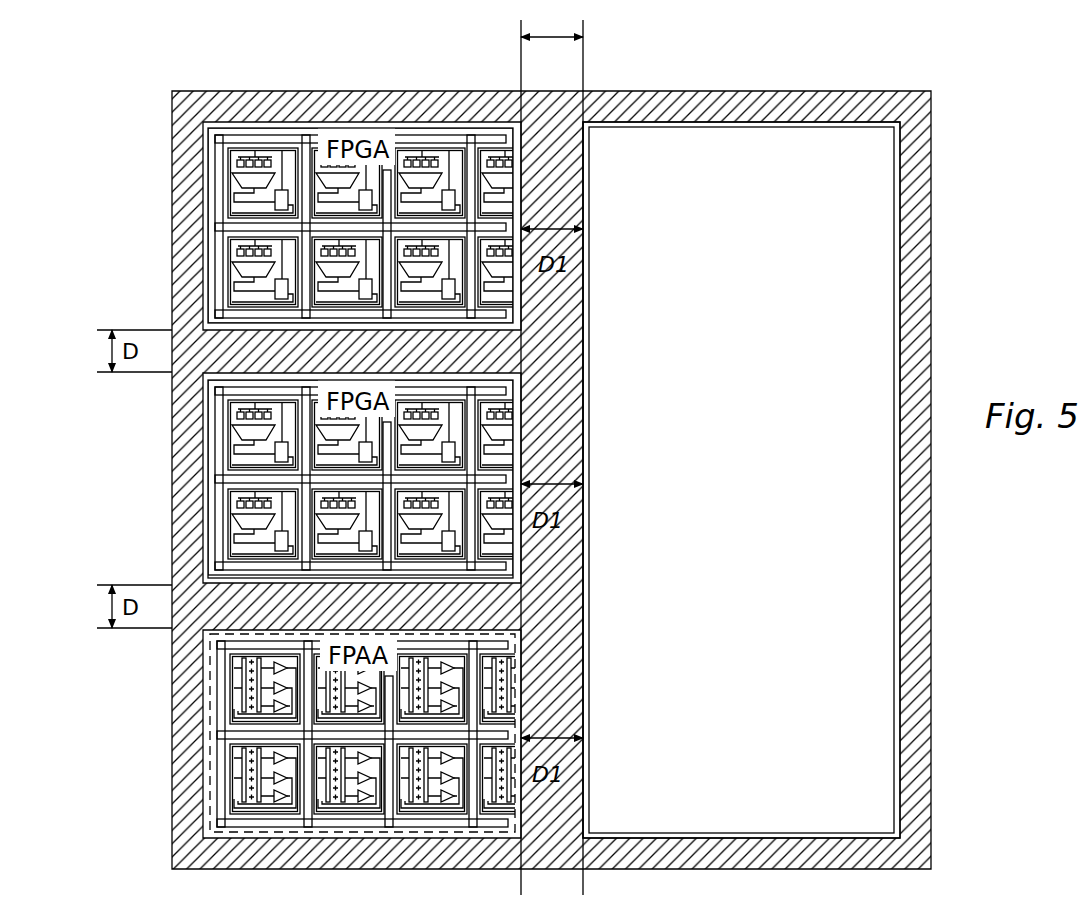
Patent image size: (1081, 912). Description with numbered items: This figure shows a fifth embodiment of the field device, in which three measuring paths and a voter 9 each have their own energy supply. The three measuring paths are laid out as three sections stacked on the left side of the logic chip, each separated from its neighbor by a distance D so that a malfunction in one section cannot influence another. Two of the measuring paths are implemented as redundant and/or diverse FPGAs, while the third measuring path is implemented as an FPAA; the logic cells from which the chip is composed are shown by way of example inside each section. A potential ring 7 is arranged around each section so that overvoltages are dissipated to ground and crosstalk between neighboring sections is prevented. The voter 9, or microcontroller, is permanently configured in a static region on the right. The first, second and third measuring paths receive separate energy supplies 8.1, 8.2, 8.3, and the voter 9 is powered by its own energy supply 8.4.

The potential ring 7 is at (210, 265).
The energy supply 8.1 is at (152, 245).
The energy supply 8.2 is at (152, 502).
The energy supply 8.3 is at (152, 753).
The energy supply 8.4 is at (987, 245).
The voter 9 is at (750, 268).